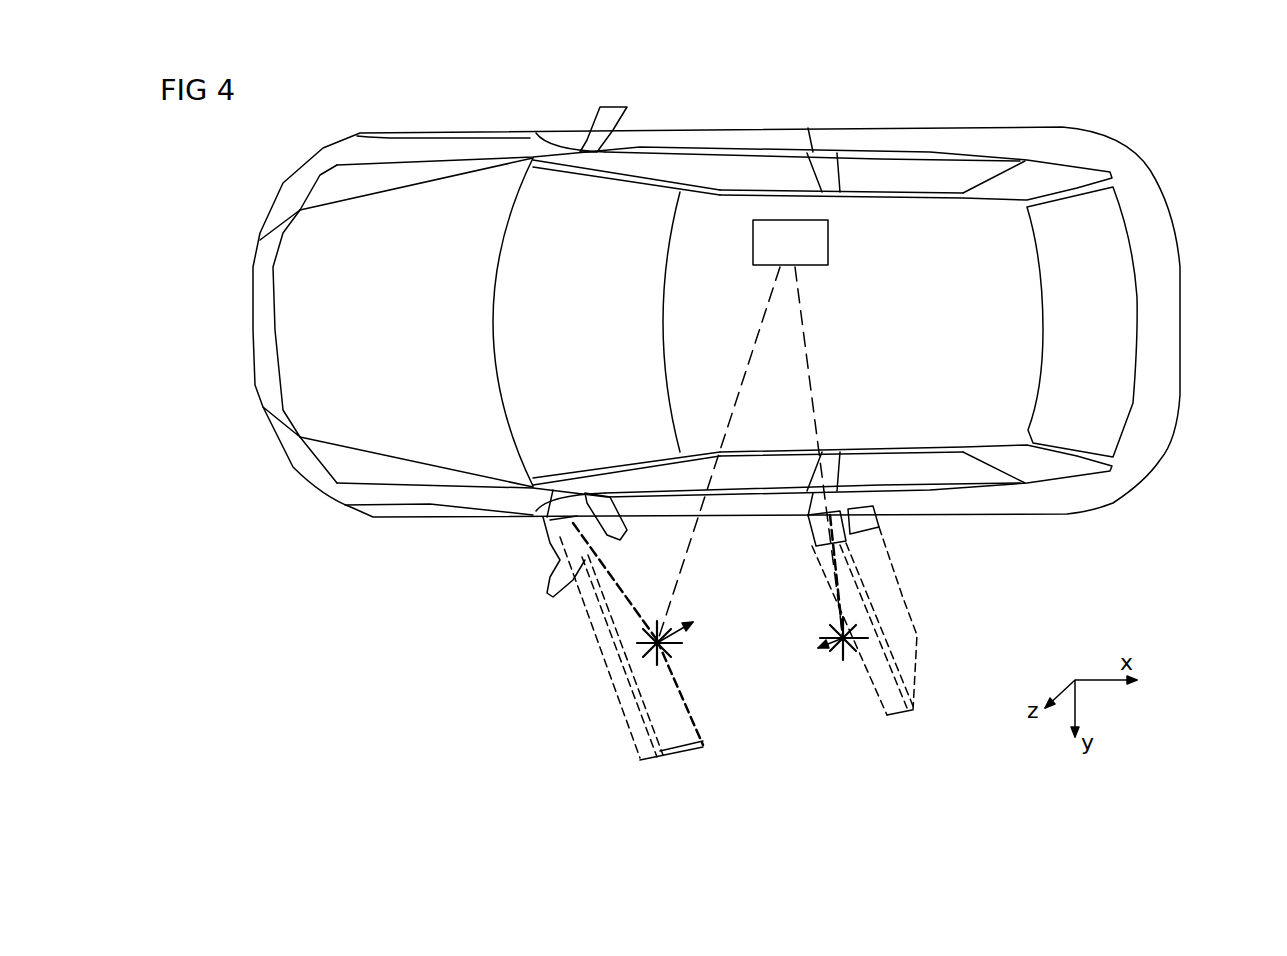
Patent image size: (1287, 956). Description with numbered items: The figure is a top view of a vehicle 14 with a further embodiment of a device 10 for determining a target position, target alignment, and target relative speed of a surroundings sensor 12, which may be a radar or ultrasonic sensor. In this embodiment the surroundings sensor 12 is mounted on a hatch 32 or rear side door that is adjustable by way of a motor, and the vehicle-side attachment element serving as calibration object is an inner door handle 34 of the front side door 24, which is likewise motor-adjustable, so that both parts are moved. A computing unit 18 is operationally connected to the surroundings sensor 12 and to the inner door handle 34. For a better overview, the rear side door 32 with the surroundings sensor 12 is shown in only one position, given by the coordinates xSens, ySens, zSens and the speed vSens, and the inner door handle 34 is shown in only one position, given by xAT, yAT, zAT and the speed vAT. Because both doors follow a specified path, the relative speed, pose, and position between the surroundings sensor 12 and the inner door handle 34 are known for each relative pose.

The device 10 is at (797, 720).
The surroundings sensor 12 is at (845, 676).
The vehicle 14 is at (1167, 292).
The computing unit 18 is at (808, 243).
The front side door 24 is at (677, 737).
The hatch 32 is at (893, 702).
The inner door handle 34 is at (686, 657).